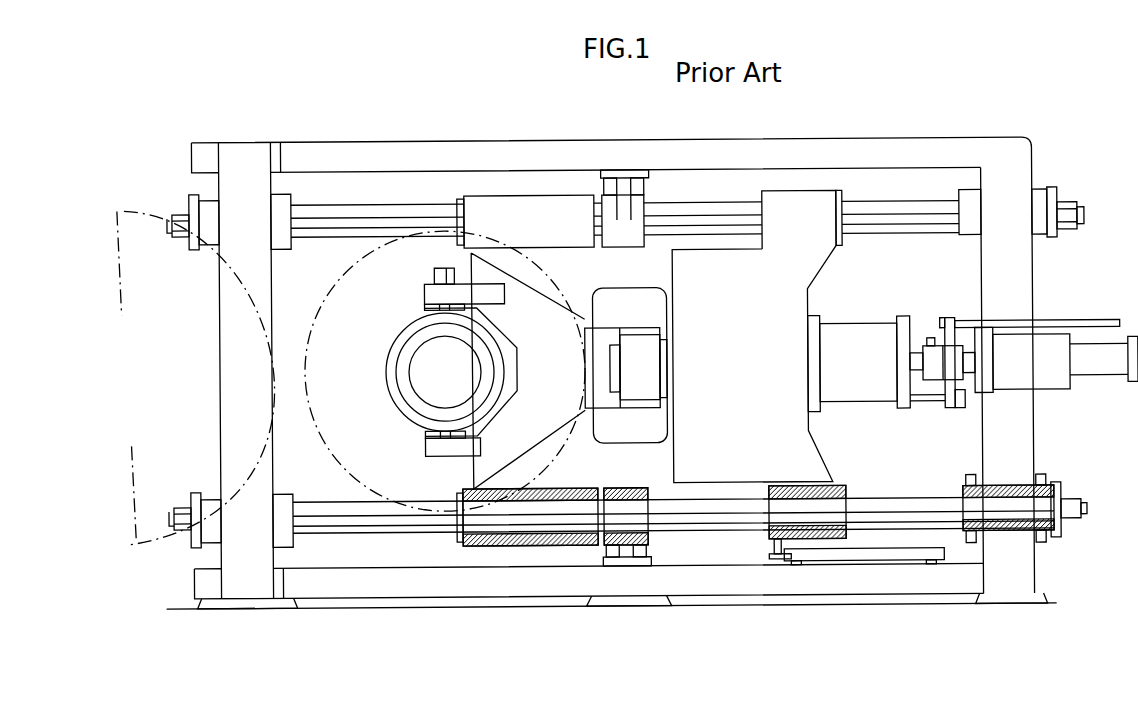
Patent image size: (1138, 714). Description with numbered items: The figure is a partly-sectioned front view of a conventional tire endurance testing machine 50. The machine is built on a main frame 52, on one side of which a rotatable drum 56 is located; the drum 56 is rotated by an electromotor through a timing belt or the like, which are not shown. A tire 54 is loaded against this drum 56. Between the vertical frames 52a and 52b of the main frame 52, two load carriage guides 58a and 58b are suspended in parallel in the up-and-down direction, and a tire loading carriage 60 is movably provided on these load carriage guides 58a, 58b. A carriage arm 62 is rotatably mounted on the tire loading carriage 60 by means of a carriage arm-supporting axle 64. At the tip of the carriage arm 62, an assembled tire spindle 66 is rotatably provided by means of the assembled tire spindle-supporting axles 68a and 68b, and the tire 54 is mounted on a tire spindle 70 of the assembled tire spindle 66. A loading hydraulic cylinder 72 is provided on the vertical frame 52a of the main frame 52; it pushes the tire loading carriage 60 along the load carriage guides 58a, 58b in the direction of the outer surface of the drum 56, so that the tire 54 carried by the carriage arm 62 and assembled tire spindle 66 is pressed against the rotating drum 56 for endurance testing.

The tire endurance testing machine 50 is at (525, 109).
The main frame 52 is at (893, 137).
The vertical frame 52a is at (1025, 160).
The vertical frame 52b is at (250, 160).
The tire 54 is at (360, 257).
The drum 56 is at (158, 217).
The load carriage guide 58a is at (920, 207).
The load carriage guide 58b is at (390, 512).
The tire loading carriage 60 is at (725, 470).
The carriage arm 62 is at (584, 412).
The carriage arm-supporting axle 64 is at (668, 360).
The assembled tire spindle 66 is at (383, 390).
The assembled tire spindle-supporting axle 68a is at (437, 300).
The assembled tire spindle-supporting axle 68b is at (437, 455).
The tire spindle 70 is at (424, 357).
The loading hydraulic cylinder 72 is at (1055, 380).